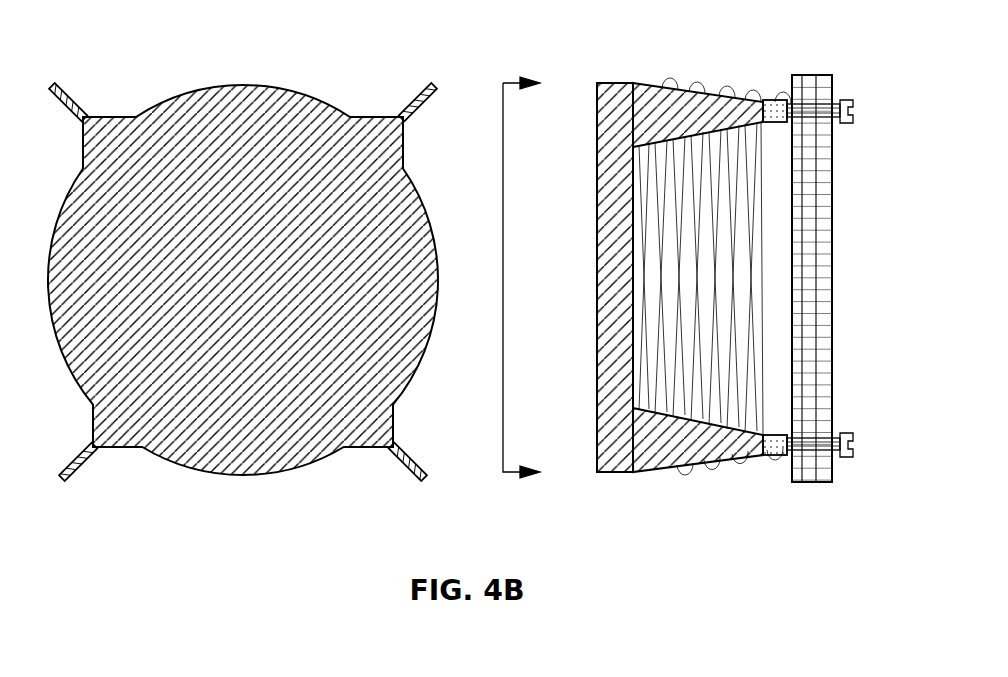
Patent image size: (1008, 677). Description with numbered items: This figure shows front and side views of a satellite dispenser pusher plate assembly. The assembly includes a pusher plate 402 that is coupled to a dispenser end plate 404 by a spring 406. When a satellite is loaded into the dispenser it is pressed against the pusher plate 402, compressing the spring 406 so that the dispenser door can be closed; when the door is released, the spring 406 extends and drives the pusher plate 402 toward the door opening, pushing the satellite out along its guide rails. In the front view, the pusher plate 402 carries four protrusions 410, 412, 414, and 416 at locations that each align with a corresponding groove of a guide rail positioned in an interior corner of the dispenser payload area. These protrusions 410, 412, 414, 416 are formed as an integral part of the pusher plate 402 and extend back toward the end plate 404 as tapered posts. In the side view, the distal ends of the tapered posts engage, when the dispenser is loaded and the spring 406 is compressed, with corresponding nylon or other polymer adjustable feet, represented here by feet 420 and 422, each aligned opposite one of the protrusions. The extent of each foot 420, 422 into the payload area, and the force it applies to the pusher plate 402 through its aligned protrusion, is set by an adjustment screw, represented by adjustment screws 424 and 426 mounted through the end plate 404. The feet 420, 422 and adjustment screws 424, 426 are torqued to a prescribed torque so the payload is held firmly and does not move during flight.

The pusher plate 402 is at (240, 83).
The dispenser end plate 404 is at (830, 233).
The spring 406 is at (755, 85).
The protrusion 410 is at (65, 92).
The protrusion 412 is at (413, 97).
The protrusion 414 is at (72, 453).
The protrusion 416 is at (402, 460).
The adjustable foot 420 is at (770, 100).
The adjustable foot 422 is at (768, 455).
The adjustment screw 424 is at (850, 100).
The adjustment screw 426 is at (850, 458).